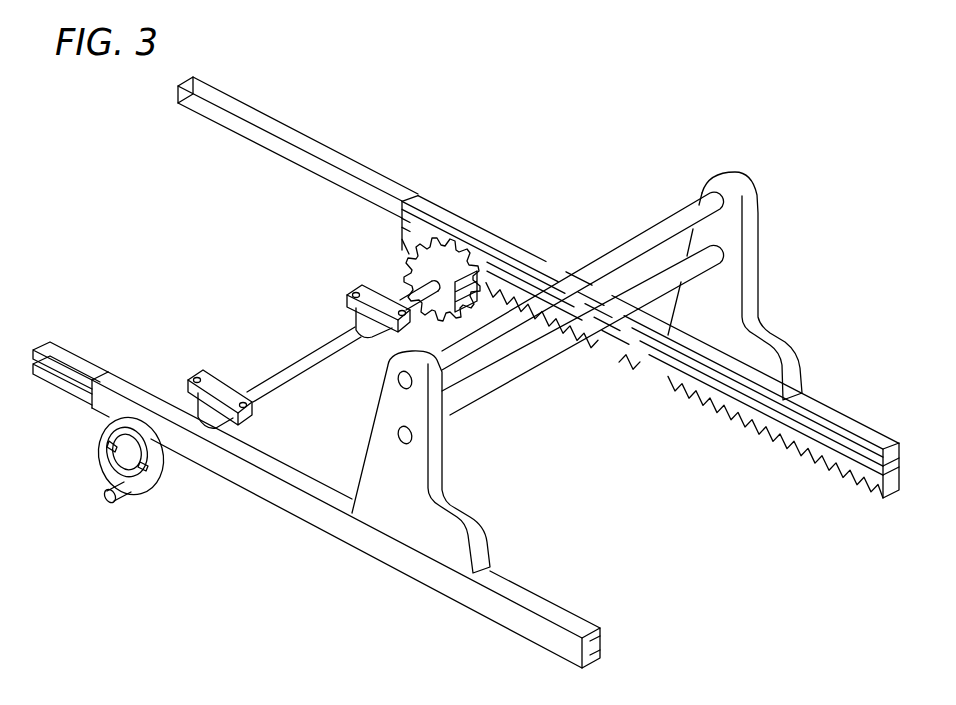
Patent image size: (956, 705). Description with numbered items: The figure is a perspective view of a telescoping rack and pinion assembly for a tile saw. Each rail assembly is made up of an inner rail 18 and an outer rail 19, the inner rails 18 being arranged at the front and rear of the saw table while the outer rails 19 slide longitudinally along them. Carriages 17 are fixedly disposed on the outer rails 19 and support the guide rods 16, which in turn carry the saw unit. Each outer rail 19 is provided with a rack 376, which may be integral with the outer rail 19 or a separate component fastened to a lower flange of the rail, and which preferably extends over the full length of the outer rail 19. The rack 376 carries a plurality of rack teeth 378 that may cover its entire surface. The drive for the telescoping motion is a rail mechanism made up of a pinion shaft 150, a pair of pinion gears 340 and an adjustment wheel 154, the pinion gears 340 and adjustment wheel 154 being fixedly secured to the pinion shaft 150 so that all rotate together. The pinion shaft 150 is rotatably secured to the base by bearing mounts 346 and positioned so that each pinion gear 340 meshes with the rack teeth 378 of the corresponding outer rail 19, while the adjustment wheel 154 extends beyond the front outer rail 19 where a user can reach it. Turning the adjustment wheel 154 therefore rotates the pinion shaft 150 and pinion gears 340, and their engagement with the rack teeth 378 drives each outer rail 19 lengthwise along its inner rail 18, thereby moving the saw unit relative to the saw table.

The inner rail 18 is at (270, 124).
The outer rail 19 is at (444, 212).
The pinion gear 340 is at (398, 263).
The pinion shaft 150 is at (287, 365).
The bearing mount 346 is at (219, 384).
The guide rod 16 is at (472, 402).
The rack 376 is at (603, 360).
The rack teeth 378 is at (673, 388).
The carriage 17 is at (452, 545).
The adjustment wheel 154 is at (145, 490).